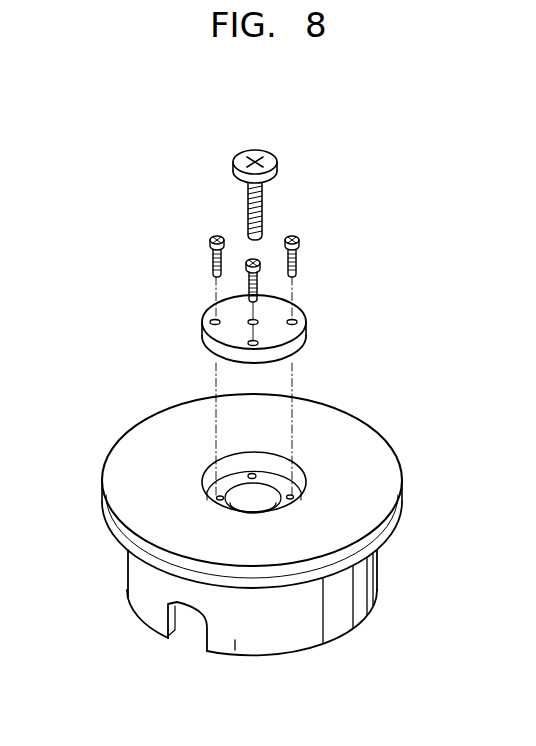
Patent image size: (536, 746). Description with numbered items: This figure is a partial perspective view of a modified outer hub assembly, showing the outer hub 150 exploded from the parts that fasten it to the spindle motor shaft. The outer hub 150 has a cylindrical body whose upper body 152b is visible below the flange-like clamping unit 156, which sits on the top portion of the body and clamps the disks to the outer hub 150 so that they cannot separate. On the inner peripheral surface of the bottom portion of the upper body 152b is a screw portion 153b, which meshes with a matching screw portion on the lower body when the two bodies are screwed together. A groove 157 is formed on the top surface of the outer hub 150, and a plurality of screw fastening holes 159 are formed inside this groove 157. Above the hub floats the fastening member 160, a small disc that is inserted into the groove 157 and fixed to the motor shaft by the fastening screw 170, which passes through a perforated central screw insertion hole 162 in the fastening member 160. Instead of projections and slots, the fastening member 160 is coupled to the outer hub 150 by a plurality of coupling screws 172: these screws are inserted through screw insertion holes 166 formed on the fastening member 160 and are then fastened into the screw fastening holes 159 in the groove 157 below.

The outer hub 150 is at (141, 449).
The upper body 152b is at (365, 617).
The screw portion 153b is at (188, 633).
The clamping unit 156 is at (405, 480).
The groove 157 is at (290, 460).
The screw fastening holes 159 is at (251, 473).
The fastening member 160 is at (307, 345).
The central screw insertion hole 162 is at (247, 320).
The screw insertion holes 166 is at (300, 305).
The fastening screw 170 is at (277, 153).
The coupling screws 172 is at (297, 233).